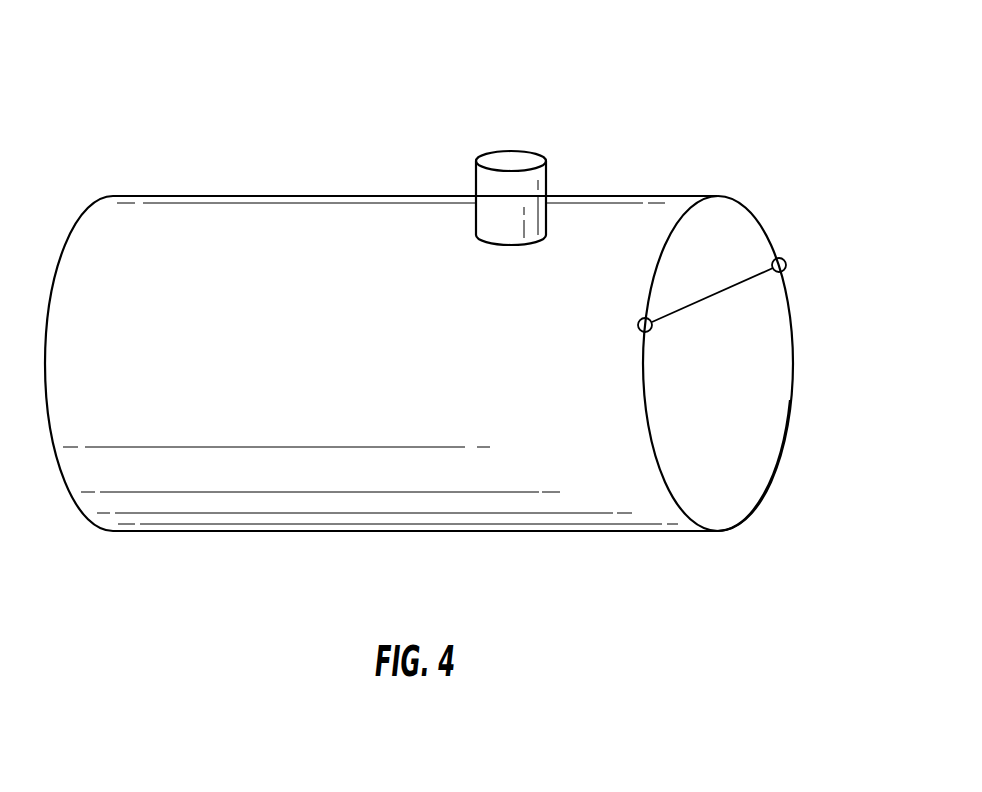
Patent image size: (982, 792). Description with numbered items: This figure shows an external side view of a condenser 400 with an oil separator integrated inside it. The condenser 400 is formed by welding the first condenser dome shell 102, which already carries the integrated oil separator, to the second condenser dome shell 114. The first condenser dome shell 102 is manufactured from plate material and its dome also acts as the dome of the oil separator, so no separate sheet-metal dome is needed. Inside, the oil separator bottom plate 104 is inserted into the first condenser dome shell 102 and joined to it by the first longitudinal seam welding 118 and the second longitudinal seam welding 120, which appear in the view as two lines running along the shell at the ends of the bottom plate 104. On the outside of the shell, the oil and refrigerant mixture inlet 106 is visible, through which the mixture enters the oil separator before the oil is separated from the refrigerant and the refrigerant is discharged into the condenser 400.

The condenser 400 is at (642, 60).
The first condenser dome shell 102 is at (725, 196).
The oil separator bottom plate 104 is at (724, 293).
The oil and refrigerant mixture inlet 106 is at (507, 157).
The second condenser dome shell 114 is at (755, 512).
The first longitudinal seam welding 118 is at (641, 318).
The second longitudinal seam welding 120 is at (783, 259).